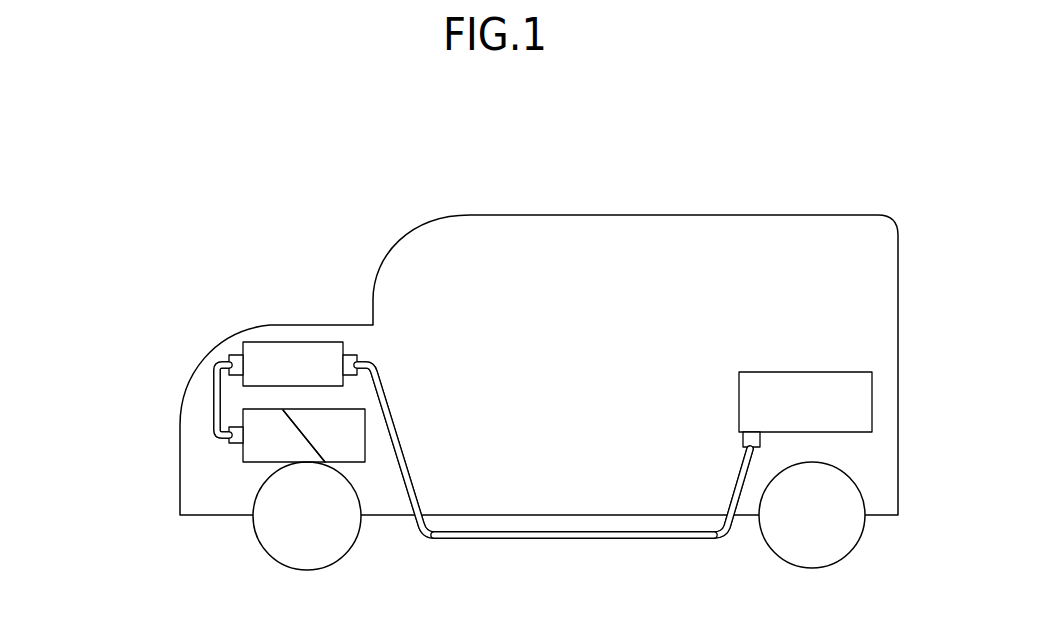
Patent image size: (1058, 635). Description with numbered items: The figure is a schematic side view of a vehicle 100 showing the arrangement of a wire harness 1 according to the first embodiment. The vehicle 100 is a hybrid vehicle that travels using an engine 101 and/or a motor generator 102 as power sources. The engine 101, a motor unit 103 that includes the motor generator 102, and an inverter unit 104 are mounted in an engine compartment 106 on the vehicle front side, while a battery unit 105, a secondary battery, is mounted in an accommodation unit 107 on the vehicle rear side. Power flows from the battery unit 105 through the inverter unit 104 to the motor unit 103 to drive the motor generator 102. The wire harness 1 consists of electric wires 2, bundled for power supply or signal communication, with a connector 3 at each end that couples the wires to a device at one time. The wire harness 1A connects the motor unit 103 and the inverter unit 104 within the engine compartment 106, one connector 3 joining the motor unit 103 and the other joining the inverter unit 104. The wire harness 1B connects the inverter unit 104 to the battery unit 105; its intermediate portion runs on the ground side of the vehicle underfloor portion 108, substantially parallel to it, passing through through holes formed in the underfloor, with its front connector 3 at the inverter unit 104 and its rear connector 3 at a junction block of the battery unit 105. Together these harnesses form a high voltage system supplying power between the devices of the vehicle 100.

The vehicle 100 is at (626, 186).
The wire harness 1 is at (410, 410).
The wire harness 1A is at (138, 340).
The wire harness 1B is at (550, 324).
The electric wire 2 is at (210, 388).
The connector 3 is at (231, 356).
The engine 101 is at (350, 442).
The motor generator 102 is at (304, 436).
The motor unit 103 is at (260, 447).
The inverter unit 104 is at (292, 340).
The battery unit 105 is at (833, 383).
The engine compartment 106 is at (196, 493).
The accommodation unit 107 is at (873, 443).
The vehicle underfloor portion 108 is at (637, 517).